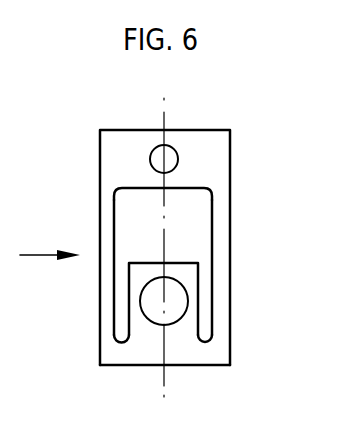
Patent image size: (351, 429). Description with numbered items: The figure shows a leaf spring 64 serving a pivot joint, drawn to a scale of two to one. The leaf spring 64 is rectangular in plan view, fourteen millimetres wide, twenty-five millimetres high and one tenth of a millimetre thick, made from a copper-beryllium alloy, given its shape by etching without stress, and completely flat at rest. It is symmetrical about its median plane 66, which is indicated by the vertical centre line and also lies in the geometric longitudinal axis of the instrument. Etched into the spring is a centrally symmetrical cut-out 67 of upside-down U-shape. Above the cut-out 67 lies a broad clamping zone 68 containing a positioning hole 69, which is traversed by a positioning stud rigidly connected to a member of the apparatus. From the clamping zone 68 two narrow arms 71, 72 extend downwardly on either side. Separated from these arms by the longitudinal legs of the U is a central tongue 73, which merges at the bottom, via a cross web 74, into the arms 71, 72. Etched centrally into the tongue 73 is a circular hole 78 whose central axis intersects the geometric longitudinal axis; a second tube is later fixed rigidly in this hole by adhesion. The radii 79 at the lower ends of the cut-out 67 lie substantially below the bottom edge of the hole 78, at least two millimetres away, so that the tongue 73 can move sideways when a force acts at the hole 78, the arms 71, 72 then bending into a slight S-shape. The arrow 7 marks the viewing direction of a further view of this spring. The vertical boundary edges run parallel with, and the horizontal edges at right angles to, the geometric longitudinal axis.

The viewing direction arrow 7 is at (50, 243).
The leaf spring 64 is at (264, 137).
The median plane 66 is at (164, 122).
The cut-out 67 is at (138, 208).
The clamping zone 68 is at (130, 137).
The positioning hole 69 is at (150, 160).
The arm 71 is at (107, 268).
The arm 72 is at (220, 232).
The central tongue 73 is at (188, 277).
The cross web 74 is at (179, 343).
The circular hole 78 is at (150, 318).
The radii 79 is at (121, 334).